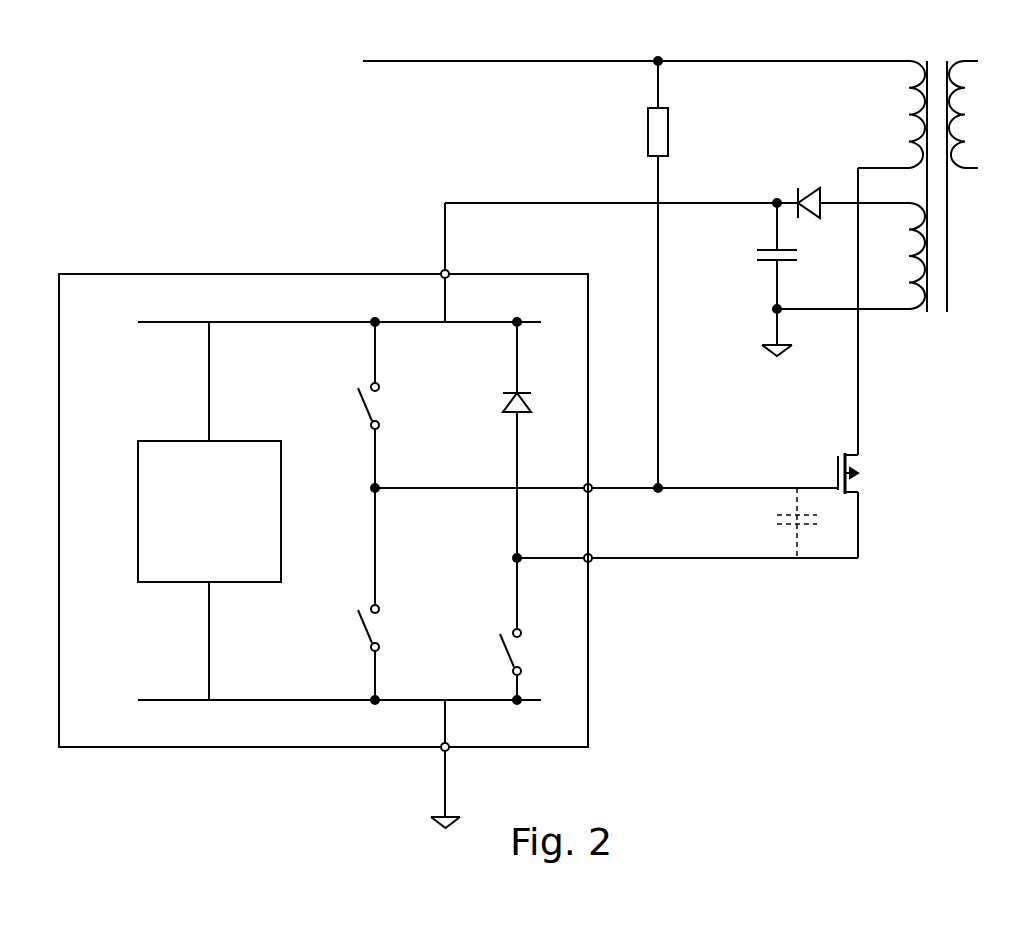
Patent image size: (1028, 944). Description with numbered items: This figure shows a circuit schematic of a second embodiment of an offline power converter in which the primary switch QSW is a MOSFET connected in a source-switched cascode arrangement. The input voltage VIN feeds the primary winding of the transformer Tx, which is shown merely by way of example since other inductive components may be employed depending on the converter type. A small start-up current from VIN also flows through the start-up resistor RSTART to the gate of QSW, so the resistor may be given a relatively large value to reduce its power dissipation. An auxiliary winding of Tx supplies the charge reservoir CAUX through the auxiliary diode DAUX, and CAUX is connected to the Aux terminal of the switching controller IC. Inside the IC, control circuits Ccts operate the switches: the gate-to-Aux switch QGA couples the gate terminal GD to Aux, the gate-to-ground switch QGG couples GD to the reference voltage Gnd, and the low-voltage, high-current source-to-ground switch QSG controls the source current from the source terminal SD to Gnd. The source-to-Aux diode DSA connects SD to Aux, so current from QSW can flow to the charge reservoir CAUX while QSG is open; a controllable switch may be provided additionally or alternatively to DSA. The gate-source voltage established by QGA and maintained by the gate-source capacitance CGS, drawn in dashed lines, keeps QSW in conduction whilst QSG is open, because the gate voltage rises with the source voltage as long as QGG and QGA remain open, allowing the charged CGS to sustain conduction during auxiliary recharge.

The input voltage VIN is at (614, 63).
The start-up resistor RSTART is at (612, 276).
The transformer Tx is at (918, 206).
The auxiliary diode DAUX is at (677, 185).
The charge reservoir CAUX is at (800, 279).
The primary switch QSW is at (877, 363).
The gate terminal GD is at (606, 472).
The source terminal SD is at (687, 576).
The gate-source capacitance CGS is at (768, 523).
The IC controller IC is at (323, 510).
The Aux terminal Aux is at (418, 262).
The control circuits Ccts is at (209, 511).
The gate-to-Aux switch QGA is at (361, 407).
The gate-to-ground switch QGG is at (361, 629).
The source-to-Aux diode DSA is at (492, 440).
The source-to-ground switch QSG is at (502, 653).
The ground Gnd is at (421, 764).